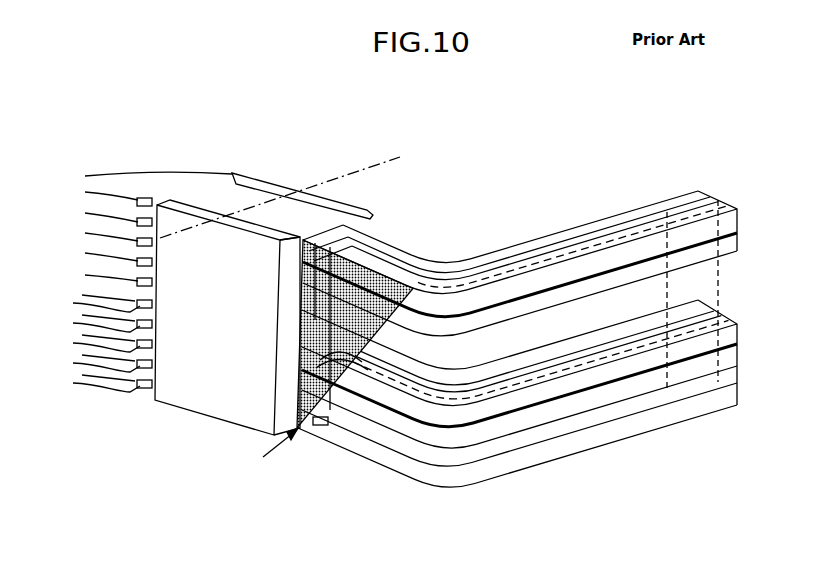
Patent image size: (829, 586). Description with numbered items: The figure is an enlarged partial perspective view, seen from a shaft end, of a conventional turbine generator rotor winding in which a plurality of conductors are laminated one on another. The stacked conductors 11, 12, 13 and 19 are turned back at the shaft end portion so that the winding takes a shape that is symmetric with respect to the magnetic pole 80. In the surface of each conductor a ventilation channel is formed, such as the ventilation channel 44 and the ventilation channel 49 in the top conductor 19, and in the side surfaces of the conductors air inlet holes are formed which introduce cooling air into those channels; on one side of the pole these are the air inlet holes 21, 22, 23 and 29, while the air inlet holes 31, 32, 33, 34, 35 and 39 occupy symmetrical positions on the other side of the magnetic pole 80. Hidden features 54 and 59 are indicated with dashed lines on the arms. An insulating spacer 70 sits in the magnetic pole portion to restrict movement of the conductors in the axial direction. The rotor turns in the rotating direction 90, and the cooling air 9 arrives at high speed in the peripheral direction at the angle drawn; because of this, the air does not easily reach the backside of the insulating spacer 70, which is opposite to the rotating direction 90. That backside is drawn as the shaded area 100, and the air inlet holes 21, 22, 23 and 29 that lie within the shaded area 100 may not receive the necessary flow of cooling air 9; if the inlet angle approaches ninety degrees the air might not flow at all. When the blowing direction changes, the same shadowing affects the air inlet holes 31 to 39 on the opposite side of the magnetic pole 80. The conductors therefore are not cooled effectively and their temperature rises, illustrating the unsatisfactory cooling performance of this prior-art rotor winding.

The cooling air 9 is at (275, 453).
The conductor 11 is at (522, 462).
The conductor 12 is at (547, 432).
The conductor 13 is at (572, 410).
The conductor 19 is at (597, 264).
The air inlet hole 21 is at (318, 423).
The air inlet hole 22 is at (332, 393).
The air inlet hole 23 is at (337, 377).
The air inlet hole 29 is at (345, 226).
The air inlet hole 31 is at (92, 385).
The air inlet hole 32 is at (92, 365).
The air inlet hole 33 is at (92, 345).
The air inlet hole 34 is at (92, 325).
The air inlet hole 35 is at (92, 305).
The air inlet hole 39 is at (146, 197).
The ventilation channel 44 is at (623, 343).
The ventilation channel 49 is at (436, 256).
The hidden element in lower arm 54 is at (703, 308).
The hidden element in upper arm 59 is at (698, 198).
The insulating spacer 70 is at (210, 383).
The magnetic pole 80 is at (298, 188).
The rotating direction 90 is at (410, 195).
The shaded area 100 is at (422, 252).